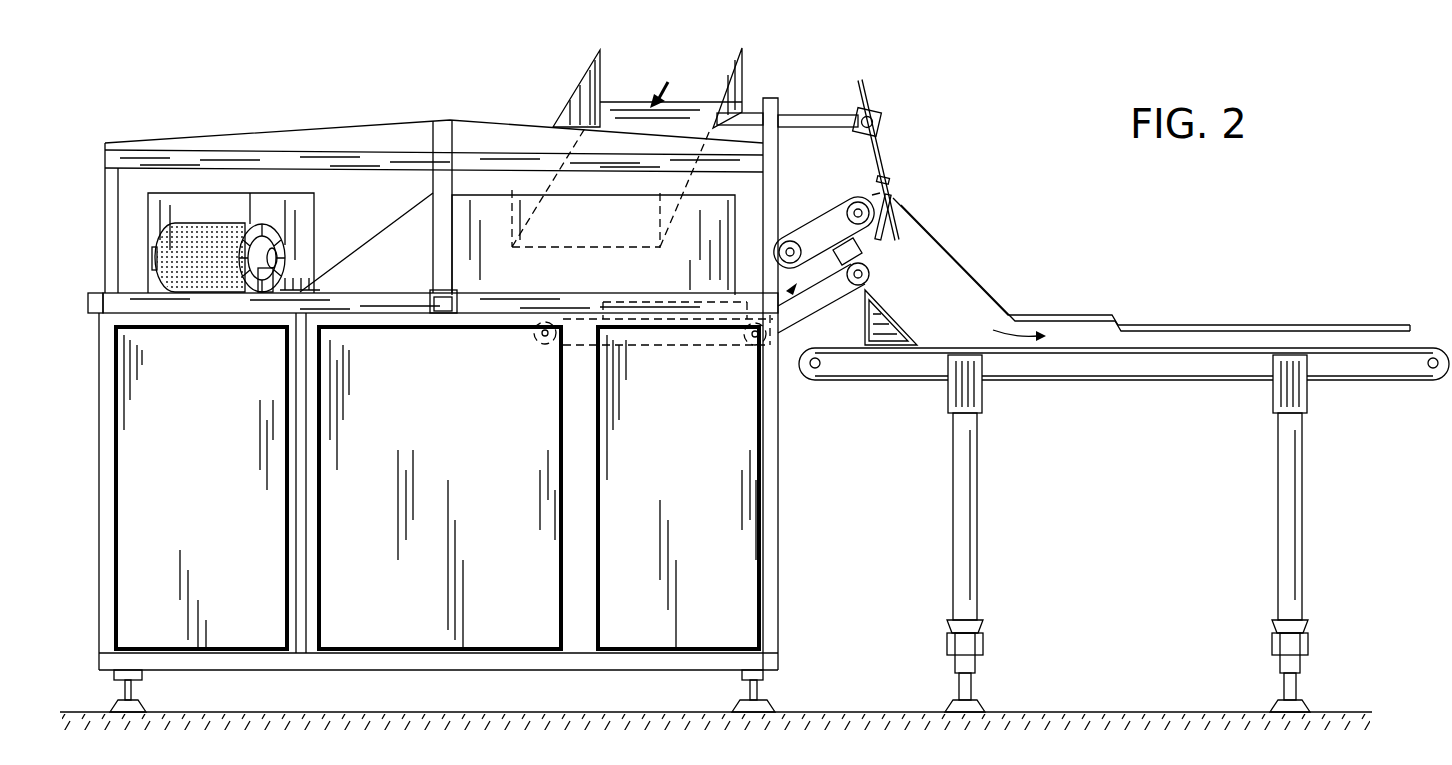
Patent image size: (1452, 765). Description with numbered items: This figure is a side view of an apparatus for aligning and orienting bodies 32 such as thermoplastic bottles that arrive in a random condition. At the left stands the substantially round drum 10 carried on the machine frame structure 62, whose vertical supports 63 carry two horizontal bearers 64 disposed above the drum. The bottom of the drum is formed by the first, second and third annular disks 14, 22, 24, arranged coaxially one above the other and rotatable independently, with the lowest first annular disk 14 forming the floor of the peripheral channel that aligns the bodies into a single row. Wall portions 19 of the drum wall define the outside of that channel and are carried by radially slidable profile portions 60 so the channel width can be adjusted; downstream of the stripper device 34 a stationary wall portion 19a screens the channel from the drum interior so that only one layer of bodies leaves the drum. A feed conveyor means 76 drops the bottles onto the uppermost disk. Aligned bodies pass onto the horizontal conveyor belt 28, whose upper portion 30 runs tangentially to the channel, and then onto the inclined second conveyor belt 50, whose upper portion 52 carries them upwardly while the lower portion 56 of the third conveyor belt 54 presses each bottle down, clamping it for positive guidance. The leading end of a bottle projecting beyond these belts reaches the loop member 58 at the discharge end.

The drum 10 is at (483, 185).
The first annular disk 14 is at (313, 184).
The wall portions 19 is at (203, 193).
The wall portion 19a is at (390, 220).
The second annular disk 22 is at (313, 184).
The third annular disk 24 is at (300, 258).
The conveyor belt 28 is at (660, 345).
The upper portion 30 is at (558, 315).
The bodies 32 is at (893, 200).
The stripper device 34 is at (176, 205).
The second conveyor belt 50 is at (788, 336).
The upper portion 52 is at (867, 248).
The third conveyor belt 54 is at (826, 203).
The lower portion 56 is at (878, 222).
The loop member 58 is at (892, 205).
The profile portions 60 is at (97, 308).
The frame structure 62 is at (106, 455).
The vertical supports 63 is at (110, 227).
The bearers 64 is at (255, 165).
The feed conveyor means 76 is at (628, 103).